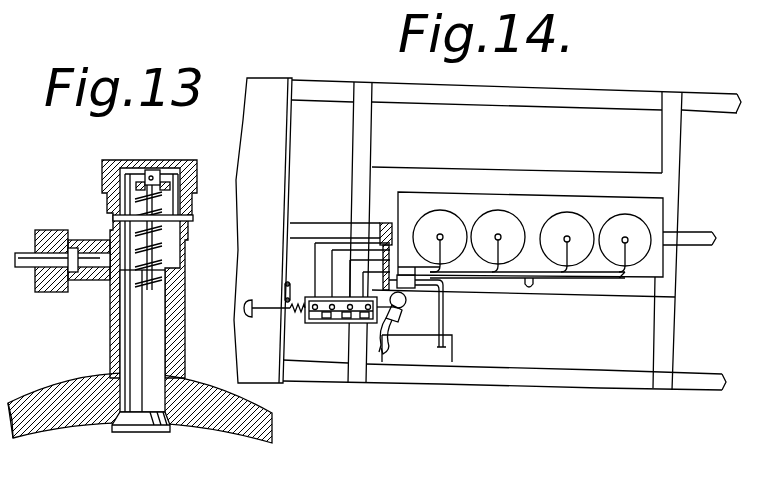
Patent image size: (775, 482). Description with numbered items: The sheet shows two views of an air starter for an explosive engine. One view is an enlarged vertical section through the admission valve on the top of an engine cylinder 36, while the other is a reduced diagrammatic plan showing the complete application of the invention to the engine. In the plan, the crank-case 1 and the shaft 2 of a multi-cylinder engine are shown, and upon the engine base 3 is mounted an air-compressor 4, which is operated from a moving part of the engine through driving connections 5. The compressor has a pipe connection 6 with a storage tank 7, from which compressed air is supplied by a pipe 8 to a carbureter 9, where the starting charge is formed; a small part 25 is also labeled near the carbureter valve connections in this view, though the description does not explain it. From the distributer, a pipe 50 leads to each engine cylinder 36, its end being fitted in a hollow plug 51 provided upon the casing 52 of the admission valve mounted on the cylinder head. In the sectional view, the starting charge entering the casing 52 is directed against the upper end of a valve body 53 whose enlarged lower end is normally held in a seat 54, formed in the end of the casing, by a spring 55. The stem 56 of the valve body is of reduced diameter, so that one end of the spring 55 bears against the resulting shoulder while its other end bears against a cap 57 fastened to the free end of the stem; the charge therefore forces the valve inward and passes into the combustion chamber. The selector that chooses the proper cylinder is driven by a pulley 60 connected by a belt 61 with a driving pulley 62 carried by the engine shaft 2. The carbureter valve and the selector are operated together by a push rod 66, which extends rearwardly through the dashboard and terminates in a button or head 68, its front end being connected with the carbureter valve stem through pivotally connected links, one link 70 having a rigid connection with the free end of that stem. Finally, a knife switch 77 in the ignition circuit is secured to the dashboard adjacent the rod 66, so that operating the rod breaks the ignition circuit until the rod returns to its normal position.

In FIG. 14, the crank-case 1 is at (535, 195).
In FIG. 14, the shaft 2 is at (327, 226).
In FIG. 14, the engine base 3 is at (486, 180).
In FIG. 14, the air-compressor 4 is at (378, 260).
In FIG. 14, the driving connections 5 is at (380, 244).
In FIG. 14, the pipe connection 6 is at (447, 323).
In FIG. 14, the storage tank 7 is at (448, 357).
In FIG. 14, the pipe 8 is at (400, 321).
In FIG. 14, the carbureter 9 is at (390, 343).
In FIG. 14, the knob 25 is at (410, 304).
In FIG. 13, the engine cylinder 36 is at (45, 423).
In FIG. 14, the engine cylinder 36 is at (449, 227).
In FIG. 13, the pipe 50 is at (38, 262).
In FIG. 14, the pipe 50 is at (540, 284).
In FIG. 13, the hollow plug 51 is at (88, 245).
In FIG. 13, the casing 52 is at (108, 320).
In FIG. 13, the valve body 53 is at (150, 330).
In FIG. 13, the seat 54 is at (143, 428).
In FIG. 13, the spring 55 is at (178, 249).
In FIG. 13, the stem 56 is at (113, 217).
In FIG. 13, the cap 57 is at (160, 183).
In FIG. 14, the pulley 60 is at (370, 325).
In FIG. 14, the belt 61 is at (382, 268).
In FIG. 14, the driving pulley 62 is at (380, 226).
In FIG. 14, the push rod 66 is at (262, 312).
In FIG. 14, the button or head 68 is at (250, 299).
In FIG. 14, the link 70 is at (388, 348).
In FIG. 14, the knife switch 77 is at (283, 290).